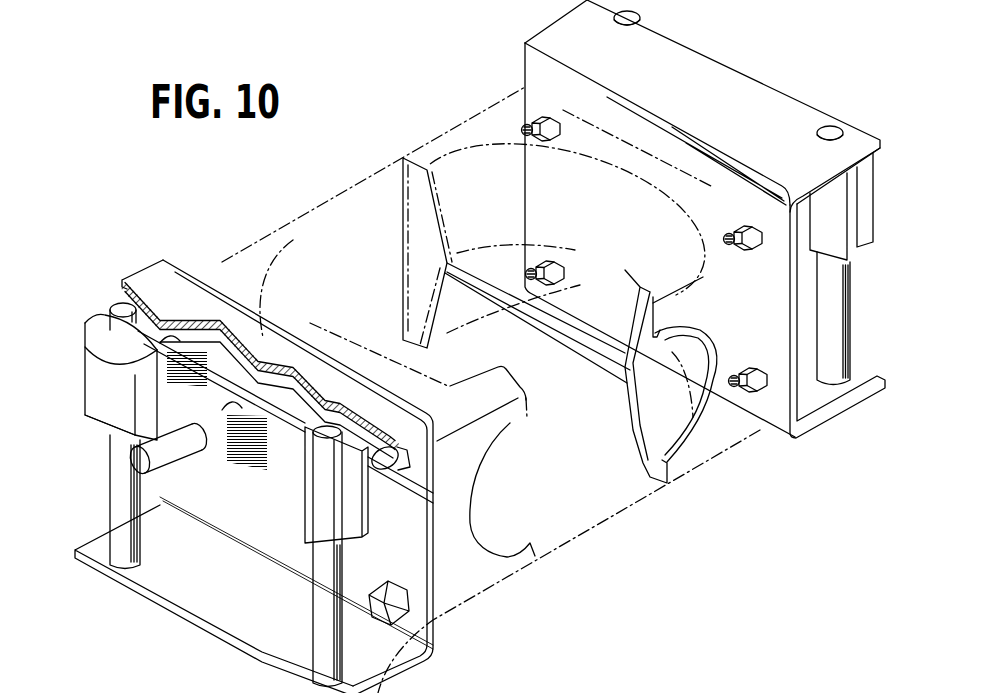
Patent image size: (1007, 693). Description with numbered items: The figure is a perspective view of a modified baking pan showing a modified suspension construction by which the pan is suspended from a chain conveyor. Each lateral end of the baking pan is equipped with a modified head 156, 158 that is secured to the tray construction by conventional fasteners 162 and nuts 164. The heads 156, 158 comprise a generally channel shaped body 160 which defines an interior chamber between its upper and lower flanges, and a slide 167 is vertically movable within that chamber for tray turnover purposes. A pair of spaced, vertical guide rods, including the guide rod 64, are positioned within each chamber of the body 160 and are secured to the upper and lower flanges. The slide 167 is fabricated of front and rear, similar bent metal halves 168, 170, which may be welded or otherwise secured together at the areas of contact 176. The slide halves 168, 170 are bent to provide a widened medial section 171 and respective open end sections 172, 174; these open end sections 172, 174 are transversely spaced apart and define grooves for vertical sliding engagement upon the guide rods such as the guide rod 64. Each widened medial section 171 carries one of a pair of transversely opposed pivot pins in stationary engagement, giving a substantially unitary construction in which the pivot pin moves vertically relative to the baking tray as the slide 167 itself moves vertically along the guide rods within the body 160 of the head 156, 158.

The bolt 64 is at (843, 130).
The head 156 is at (209, 624).
The head 158 is at (815, 62).
The channel shaped body 160 is at (807, 437).
The fastener 162 is at (410, 613).
The nut 164 is at (532, 117).
The slide 167 is at (75, 402).
The front bent metal half 168 is at (876, 192).
The rear bent metal half 170 is at (823, 233).
The widened medial section 171 is at (217, 372).
The open end section 172 is at (95, 318).
The open end section 174 is at (858, 220).
The area of contact 176 is at (86, 343).